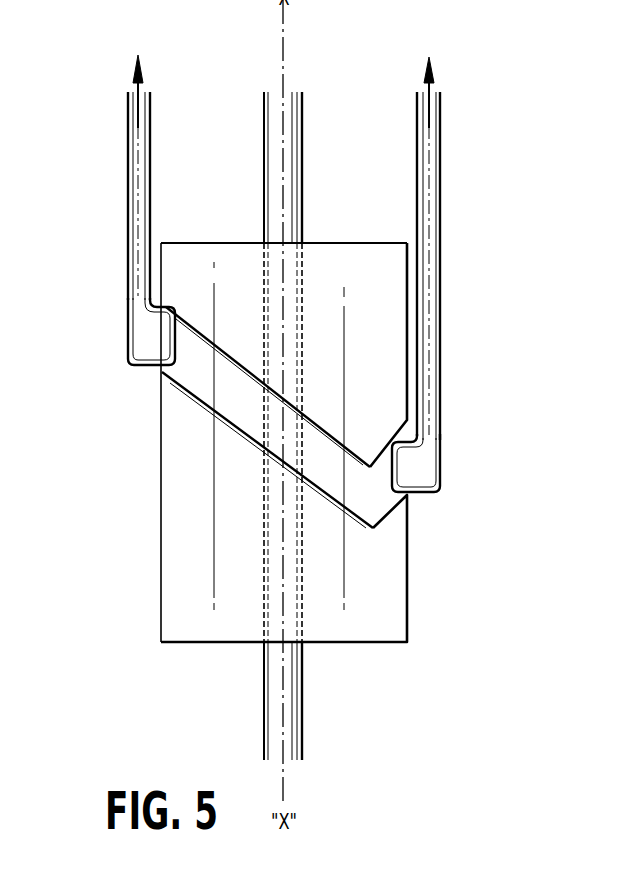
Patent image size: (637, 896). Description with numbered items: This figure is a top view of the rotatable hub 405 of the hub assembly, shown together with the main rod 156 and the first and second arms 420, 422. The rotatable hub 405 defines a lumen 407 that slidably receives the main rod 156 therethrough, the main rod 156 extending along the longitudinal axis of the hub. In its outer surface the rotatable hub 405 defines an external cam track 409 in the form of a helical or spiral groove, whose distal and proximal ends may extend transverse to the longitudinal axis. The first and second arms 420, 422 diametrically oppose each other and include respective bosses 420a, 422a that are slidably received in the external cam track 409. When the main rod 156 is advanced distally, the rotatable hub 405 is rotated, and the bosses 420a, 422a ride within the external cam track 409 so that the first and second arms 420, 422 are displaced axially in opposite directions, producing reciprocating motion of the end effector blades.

The main rod 156 is at (292, 133).
The rotatable hub 405 is at (452, 240).
The lumen 407 is at (303, 268).
The external cam track 409 is at (217, 395).
The first arm 420 is at (138, 192).
The boss 420a is at (180, 343).
The second arm 422 is at (427, 332).
The boss 422a is at (397, 477).